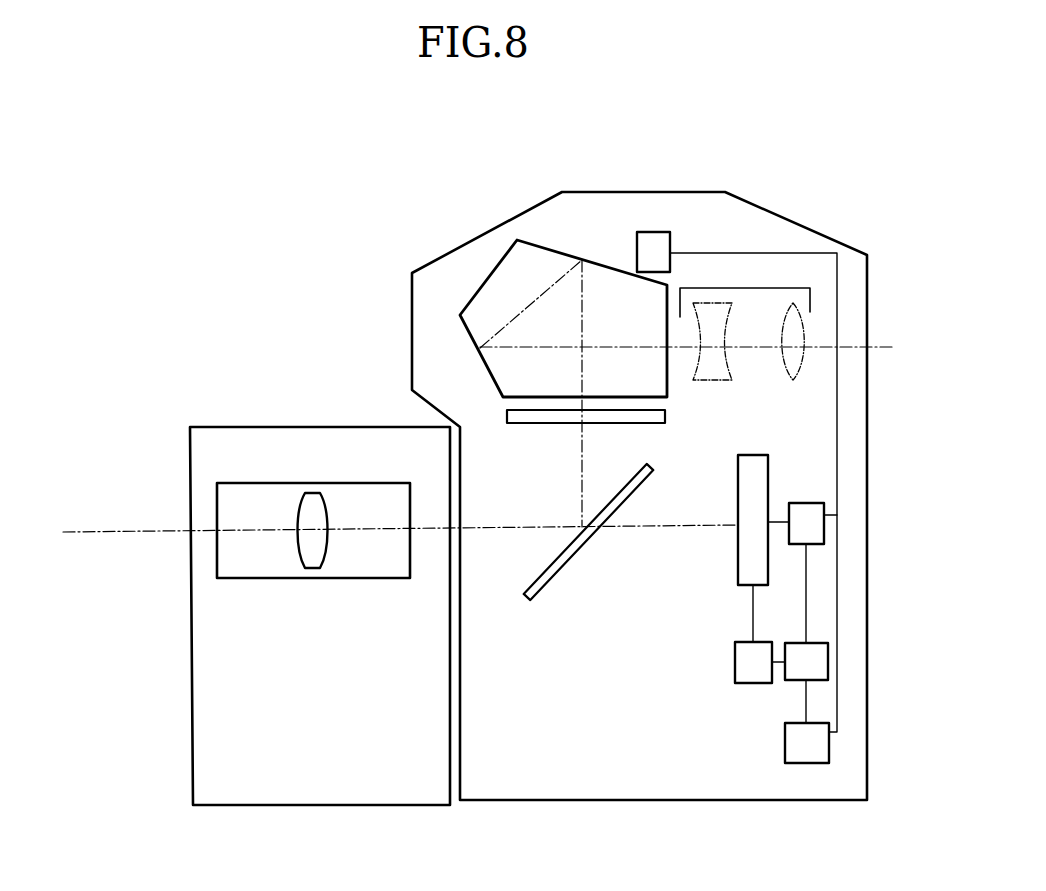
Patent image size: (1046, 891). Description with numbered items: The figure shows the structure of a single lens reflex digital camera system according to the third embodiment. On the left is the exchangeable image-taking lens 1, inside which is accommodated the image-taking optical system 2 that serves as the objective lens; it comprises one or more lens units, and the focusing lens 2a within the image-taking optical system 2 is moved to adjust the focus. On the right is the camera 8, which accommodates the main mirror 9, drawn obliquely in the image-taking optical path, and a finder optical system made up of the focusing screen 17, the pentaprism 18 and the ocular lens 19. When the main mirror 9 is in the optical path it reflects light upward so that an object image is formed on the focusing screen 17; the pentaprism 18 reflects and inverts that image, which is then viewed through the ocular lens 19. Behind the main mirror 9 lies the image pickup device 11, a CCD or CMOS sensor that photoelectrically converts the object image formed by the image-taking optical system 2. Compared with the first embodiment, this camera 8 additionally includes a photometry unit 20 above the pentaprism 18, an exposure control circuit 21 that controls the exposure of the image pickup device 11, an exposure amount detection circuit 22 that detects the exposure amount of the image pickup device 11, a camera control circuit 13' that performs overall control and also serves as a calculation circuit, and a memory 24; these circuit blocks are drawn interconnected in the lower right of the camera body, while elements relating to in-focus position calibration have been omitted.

The image-taking lens 1 is at (212, 423).
The image-taking optical system 2 is at (282, 483).
The focusing lens 2a is at (313, 493).
The camera 8 is at (747, 222).
The main mirror 9 is at (527, 600).
The image pickup device 11 is at (768, 478).
The camera control circuit 13' is at (851, 683).
The focusing screen 17 is at (665, 412).
The pentaprism 18 is at (552, 250).
The ocular lens 19 is at (772, 288).
The photometry unit 20 is at (652, 235).
The exposure control circuit 21 is at (824, 527).
The exposure amount detection circuit 22 is at (752, 678).
The memory 24 is at (803, 753).